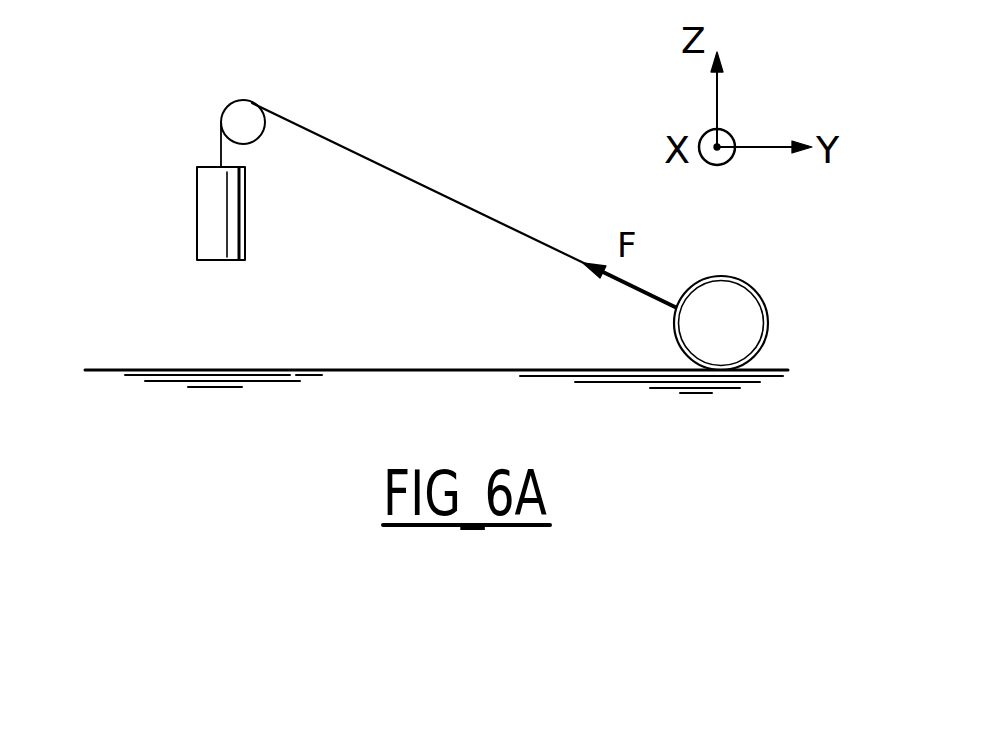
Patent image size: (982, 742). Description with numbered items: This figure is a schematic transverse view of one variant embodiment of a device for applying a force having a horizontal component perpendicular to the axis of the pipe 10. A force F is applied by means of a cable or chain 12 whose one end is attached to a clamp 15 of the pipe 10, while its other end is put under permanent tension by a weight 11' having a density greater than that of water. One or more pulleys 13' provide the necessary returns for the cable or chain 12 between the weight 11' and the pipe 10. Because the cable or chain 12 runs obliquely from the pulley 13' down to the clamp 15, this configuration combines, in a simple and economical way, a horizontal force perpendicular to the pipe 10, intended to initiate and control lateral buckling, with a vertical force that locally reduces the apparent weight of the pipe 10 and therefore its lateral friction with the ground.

The pipe 10 is at (740, 348).
The weight 11' is at (176, 191).
The cable or chain 12 is at (455, 198).
The pulley 13' is at (277, 76).
The clamp 15 is at (753, 290).